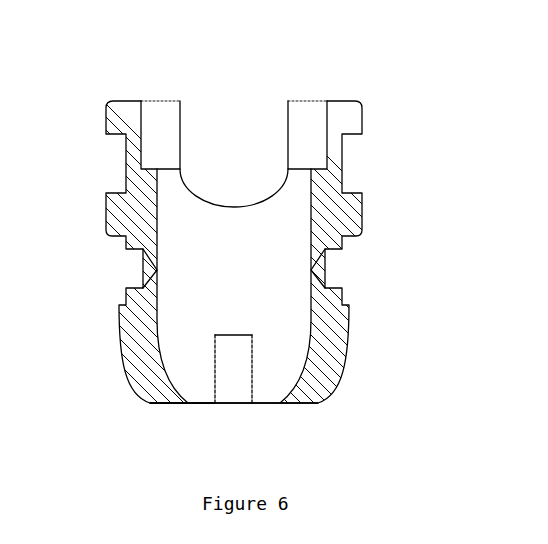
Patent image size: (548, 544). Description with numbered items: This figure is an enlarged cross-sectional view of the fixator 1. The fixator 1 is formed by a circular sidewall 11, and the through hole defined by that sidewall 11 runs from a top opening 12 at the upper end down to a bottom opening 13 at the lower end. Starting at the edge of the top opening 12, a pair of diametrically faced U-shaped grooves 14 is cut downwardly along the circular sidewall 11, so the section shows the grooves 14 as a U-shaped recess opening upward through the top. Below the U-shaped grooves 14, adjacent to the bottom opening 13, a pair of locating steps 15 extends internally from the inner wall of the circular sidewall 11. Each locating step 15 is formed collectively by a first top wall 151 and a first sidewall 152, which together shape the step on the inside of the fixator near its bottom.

The fixator 1 is at (363, 168).
The circular sidewall 11 is at (132, 218).
The top opening 12 is at (194, 106).
The bottom opening 13 is at (205, 395).
The U-shaped groove 14 is at (245, 178).
The locating step 15 is at (248, 368).
The first top wall 151 is at (237, 337).
The first sidewall 152 is at (228, 373).